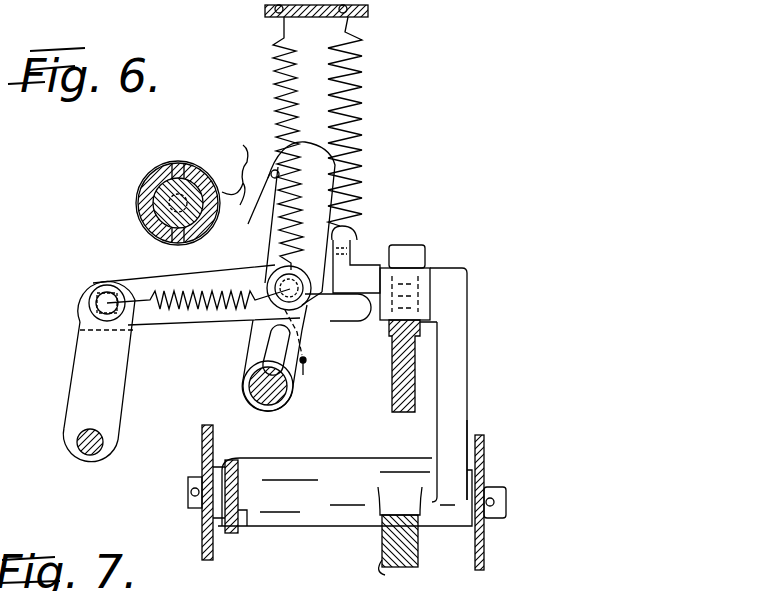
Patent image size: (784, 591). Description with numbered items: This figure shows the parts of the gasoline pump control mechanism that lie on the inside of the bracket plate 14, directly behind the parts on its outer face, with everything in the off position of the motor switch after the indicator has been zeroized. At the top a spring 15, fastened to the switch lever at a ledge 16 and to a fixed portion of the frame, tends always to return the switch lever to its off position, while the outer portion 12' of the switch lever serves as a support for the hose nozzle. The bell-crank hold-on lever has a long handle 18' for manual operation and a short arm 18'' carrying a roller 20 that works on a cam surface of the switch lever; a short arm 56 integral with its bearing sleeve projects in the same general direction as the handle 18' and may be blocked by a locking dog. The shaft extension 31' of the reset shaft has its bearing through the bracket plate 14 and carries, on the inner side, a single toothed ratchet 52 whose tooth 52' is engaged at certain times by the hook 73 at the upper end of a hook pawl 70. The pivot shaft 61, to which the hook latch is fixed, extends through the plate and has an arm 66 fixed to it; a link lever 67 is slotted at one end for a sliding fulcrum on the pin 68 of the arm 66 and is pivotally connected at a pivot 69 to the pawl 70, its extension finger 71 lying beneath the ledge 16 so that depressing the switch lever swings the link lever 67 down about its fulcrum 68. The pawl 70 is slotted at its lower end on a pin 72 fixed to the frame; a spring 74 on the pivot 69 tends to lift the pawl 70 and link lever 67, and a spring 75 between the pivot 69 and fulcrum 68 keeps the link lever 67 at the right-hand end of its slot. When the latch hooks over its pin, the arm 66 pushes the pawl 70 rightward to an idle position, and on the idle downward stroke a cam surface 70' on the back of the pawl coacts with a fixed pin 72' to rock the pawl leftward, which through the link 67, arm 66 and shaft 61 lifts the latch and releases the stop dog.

The outer portion of switch lever 12' is at (391, 328).
The bracket plate 14 is at (368, 11).
The spring 15 is at (358, 82).
The ledge 16 is at (348, 272).
The handle of hold-on lever 18' is at (345, 524).
The short arm of hold-on lever 18'' is at (483, 446).
The roller 20 is at (452, 296).
The shaft extension 31' is at (137, 198).
The single toothed ratchet 52 is at (157, 195).
The single tooth 52' is at (226, 173).
The short arm 56 is at (242, 530).
The pivot shaft 61 is at (85, 441).
The arm 66 is at (90, 360).
The link lever 67 is at (193, 330).
The pin 68 is at (107, 300).
The pivot 69 is at (300, 306).
The hook pawl 70 is at (263, 351).
The cam surface 70' is at (319, 345).
The extension finger 71 is at (350, 318).
The pin 72 is at (282, 392).
The fixed pin 72' is at (318, 379).
The hook 73 is at (285, 217).
The spring 74 is at (272, 51).
The spring 75 is at (165, 296).